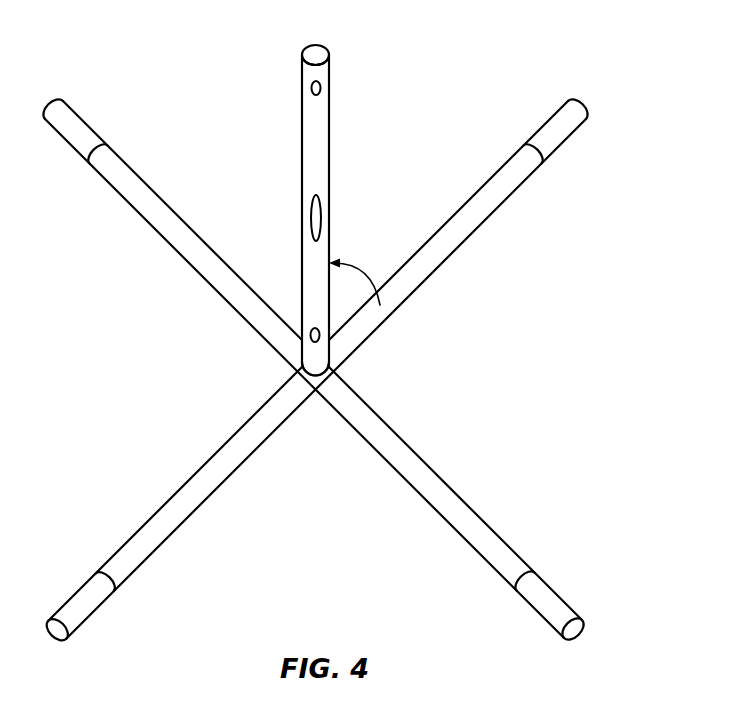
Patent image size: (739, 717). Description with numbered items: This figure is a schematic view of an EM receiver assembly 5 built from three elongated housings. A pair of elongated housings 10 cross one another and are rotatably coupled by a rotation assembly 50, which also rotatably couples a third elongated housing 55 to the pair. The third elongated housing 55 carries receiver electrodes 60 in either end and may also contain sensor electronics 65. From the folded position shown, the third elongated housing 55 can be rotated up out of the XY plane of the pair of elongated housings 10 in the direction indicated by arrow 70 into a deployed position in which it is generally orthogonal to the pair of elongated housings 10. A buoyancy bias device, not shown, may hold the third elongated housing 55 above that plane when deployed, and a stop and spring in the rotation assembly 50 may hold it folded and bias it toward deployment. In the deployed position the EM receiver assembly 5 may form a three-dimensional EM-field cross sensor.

The EM receiver assembly 5 is at (315, 324).
The elongated housings 10 is at (154, 228).
The rotation assembly 50 is at (318, 381).
The third elongated housing 55 is at (318, 210).
The receiver electrodes 60 is at (321, 88).
The sensor electronics 65 is at (321, 218).
The arrow 70 is at (353, 263).